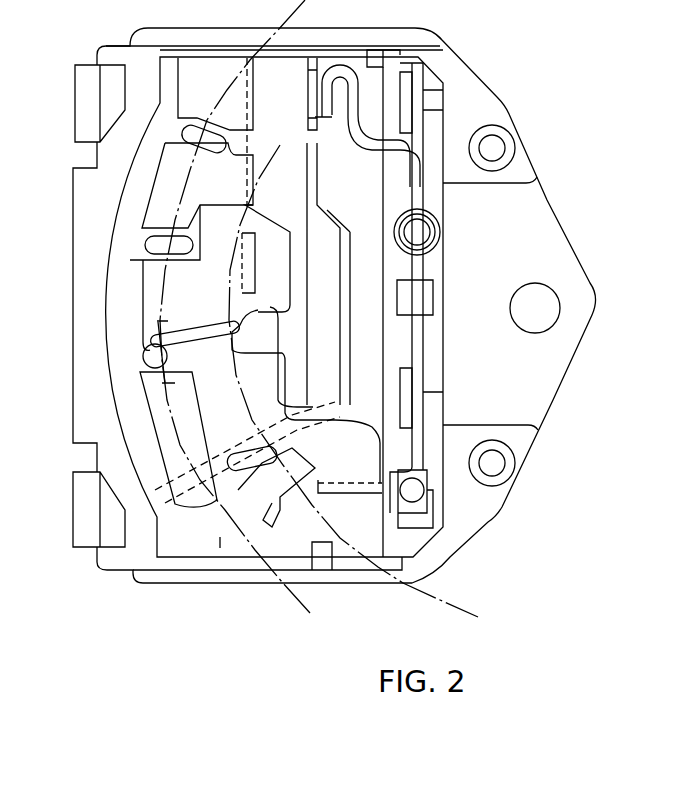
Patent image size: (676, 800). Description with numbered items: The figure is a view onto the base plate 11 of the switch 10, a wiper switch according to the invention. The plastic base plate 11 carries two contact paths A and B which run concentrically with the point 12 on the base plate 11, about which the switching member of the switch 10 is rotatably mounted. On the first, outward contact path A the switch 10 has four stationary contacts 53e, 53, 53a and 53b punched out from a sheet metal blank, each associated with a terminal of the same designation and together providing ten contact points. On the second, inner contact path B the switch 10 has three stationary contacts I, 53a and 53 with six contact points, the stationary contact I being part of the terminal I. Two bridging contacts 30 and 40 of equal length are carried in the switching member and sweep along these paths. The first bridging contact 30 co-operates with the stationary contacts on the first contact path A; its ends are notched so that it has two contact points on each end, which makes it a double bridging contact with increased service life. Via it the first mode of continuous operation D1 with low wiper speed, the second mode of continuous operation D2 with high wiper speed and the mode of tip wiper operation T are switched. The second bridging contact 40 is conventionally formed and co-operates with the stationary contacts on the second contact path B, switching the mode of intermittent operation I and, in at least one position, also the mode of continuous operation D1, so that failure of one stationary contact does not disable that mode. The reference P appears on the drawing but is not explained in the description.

The switch 10 is at (331, 297).
The base plate 11 is at (110, 53).
The point 12 is at (545, 307).
The first bridging contact 30 is at (163, 357).
The second bridging contact 40 is at (305, 303).
The stationary contact 53 is at (182, 282).
The stationary contact 53a is at (198, 182).
The stationary contact 53b is at (210, 80).
The stationary contact 53e is at (183, 403).
The first mode of continuous operation D1 is at (70, 213).
The second mode of continuous operation D2 is at (72, 142).
The mode of tip wiper operation T is at (70, 282).
The plane P is at (70, 330).
The mode of intermittent operation I is at (65, 452).
The first contact path A is at (291, 600).
The second contact path B is at (447, 605).